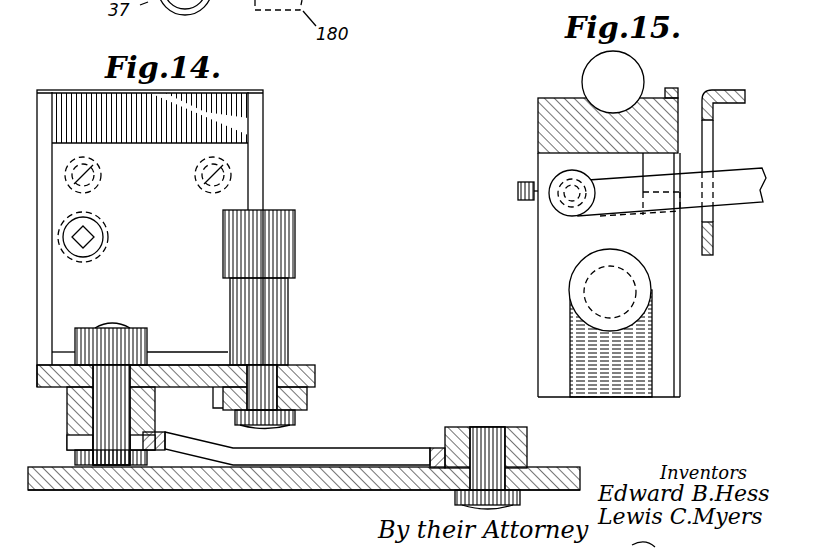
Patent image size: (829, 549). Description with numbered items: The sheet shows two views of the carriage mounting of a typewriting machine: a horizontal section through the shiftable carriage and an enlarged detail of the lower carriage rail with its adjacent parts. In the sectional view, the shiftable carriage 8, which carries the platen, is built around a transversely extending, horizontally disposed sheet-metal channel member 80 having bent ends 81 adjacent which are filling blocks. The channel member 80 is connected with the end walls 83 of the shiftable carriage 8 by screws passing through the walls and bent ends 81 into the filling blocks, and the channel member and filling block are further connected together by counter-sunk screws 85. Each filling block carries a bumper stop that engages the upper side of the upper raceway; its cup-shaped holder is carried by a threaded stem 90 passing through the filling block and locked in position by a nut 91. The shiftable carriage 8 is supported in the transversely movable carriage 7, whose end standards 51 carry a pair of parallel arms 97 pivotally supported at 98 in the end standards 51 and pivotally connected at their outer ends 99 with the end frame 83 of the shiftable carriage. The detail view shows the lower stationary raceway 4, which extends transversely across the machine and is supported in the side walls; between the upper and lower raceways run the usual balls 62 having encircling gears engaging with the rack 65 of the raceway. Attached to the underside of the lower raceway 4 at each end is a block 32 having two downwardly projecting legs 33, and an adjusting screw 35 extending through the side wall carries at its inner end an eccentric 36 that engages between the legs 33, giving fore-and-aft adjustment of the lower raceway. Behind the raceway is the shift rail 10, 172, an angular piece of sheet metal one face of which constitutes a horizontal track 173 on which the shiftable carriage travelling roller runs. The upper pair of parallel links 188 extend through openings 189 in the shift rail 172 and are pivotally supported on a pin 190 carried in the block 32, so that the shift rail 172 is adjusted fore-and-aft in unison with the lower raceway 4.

In FIG. 14, the channel member 80 is at (263, 158).
In FIG. 14, the counter-sunk screws 85 is at (195, 174).
In FIG. 14, the threaded stem 90 is at (97, 224).
In FIG. 14, the nut 91 is at (108, 238).
In FIG. 14, the bent ends 81 is at (170, 357).
In FIG. 14, the end walls 83 is at (42, 388).
In FIG. 14, the outer ends 99 is at (68, 445).
In FIG. 14, the shiftable carriage 8 is at (182, 390).
In FIG. 14, the parallel arms 97 is at (325, 447).
In FIG. 14, the end standards 51 is at (290, 491).
In FIG. 14, the transversely movable carriage 7 is at (237, 492).
In FIG. 14, the pivot 98 is at (481, 426).
In FIG. 15, the lower stationary raceway 4 is at (540, 128).
In FIG. 15, the rack 65 is at (684, 90).
In FIG. 15, the balls 62 is at (581, 78).
In FIG. 15, the downwardly projecting legs 33 is at (548, 355).
In FIG. 15, the eccentric 36 is at (582, 274).
In FIG. 15, the adjusting screw 35 is at (636, 302).
In FIG. 15, the upper parallel links 188 is at (748, 202).
In FIG. 15, the pin 190 is at (557, 202).
In FIG. 15, the block 32 is at (536, 173).
In FIG. 15, the shift rail 10 is at (732, 180).
In FIG. 15, the horizontal track 173 is at (738, 90).
In FIG. 15, the openings 189 is at (713, 150).
In FIG. 15, the shift rail 172 is at (713, 254).